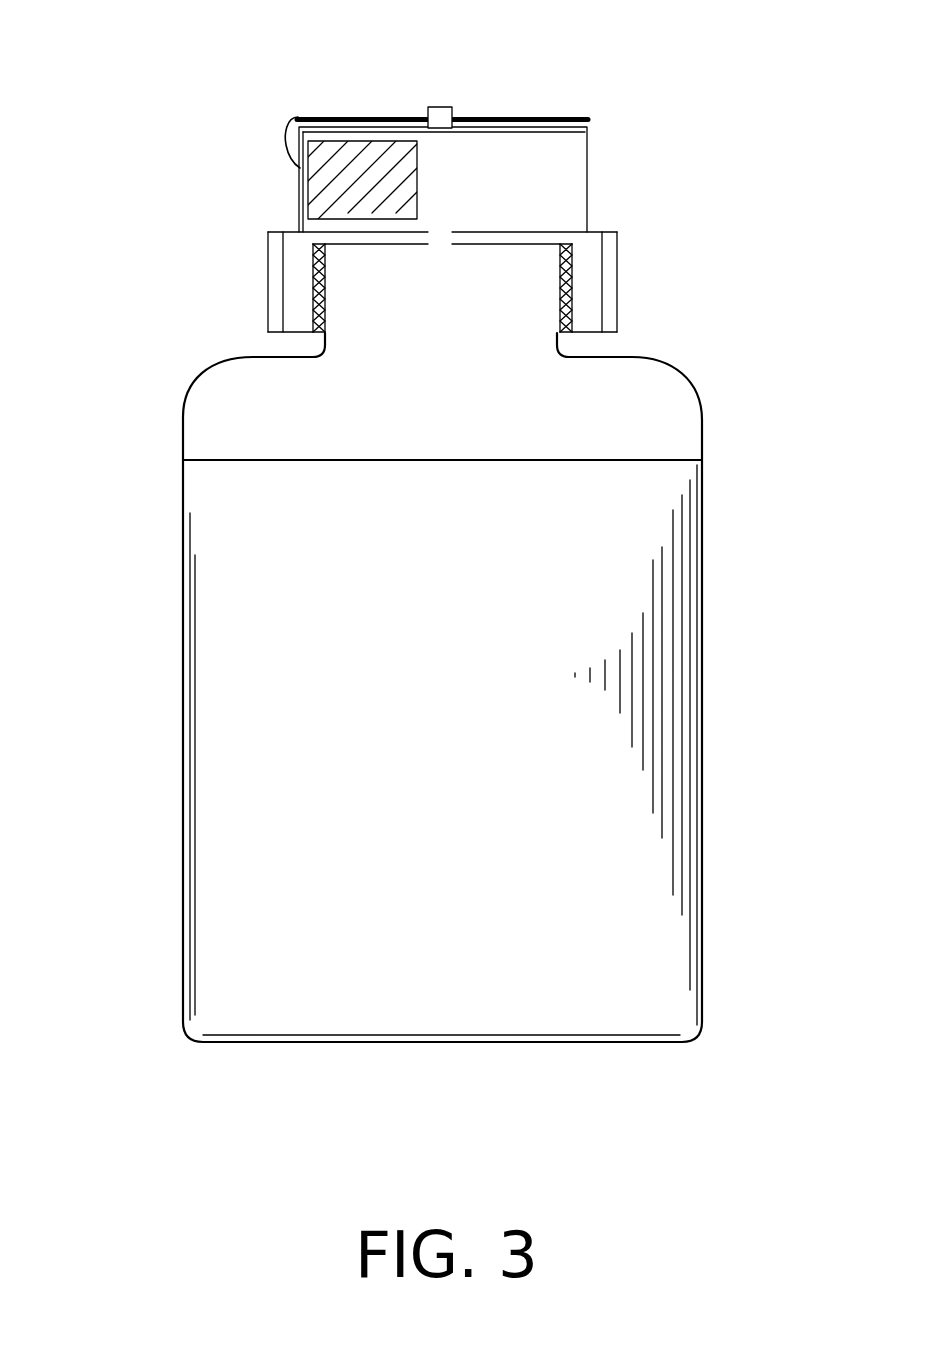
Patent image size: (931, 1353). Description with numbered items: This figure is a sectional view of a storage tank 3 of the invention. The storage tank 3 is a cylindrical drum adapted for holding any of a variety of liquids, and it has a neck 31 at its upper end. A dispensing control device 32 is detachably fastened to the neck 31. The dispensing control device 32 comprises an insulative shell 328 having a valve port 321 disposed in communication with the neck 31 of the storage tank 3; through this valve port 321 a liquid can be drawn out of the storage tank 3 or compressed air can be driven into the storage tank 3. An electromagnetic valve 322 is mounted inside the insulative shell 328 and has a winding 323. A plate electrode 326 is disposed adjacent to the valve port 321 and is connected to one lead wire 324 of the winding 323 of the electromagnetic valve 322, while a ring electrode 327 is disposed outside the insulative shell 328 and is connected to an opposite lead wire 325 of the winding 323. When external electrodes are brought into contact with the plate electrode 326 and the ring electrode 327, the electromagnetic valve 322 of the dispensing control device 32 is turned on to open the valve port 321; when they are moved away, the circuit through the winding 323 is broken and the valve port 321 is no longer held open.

The storage tank 3 is at (684, 536).
The neck 31 is at (515, 287).
The dispensing control device 32 is at (649, 194).
The valve port 321 is at (441, 107).
The electromagnetic valve 322 is at (562, 162).
The winding 323 is at (316, 177).
The lead wire 324 is at (292, 125).
The opposite lead wire 325 is at (305, 196).
The plate electrode 326 is at (353, 117).
The ring electrode 327 is at (268, 295).
The insulative shell 328 is at (300, 169).